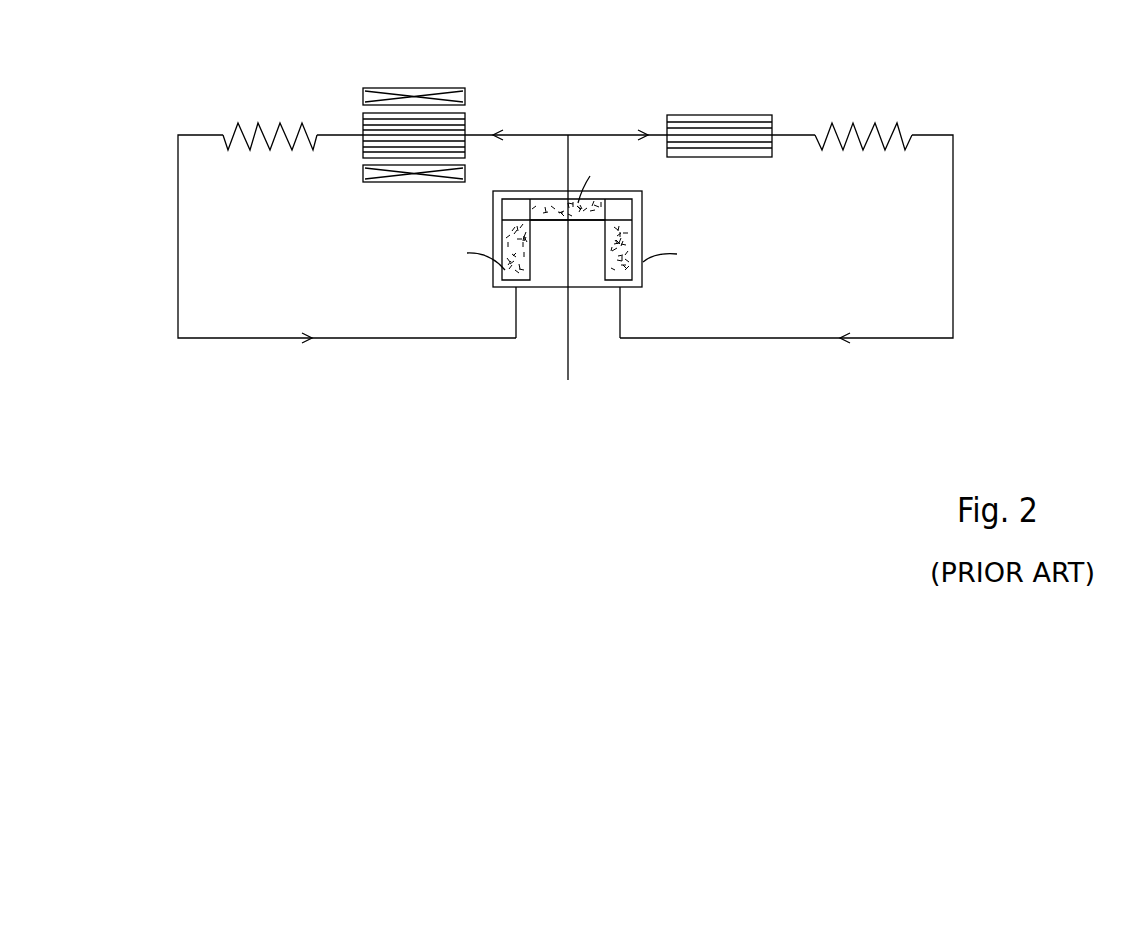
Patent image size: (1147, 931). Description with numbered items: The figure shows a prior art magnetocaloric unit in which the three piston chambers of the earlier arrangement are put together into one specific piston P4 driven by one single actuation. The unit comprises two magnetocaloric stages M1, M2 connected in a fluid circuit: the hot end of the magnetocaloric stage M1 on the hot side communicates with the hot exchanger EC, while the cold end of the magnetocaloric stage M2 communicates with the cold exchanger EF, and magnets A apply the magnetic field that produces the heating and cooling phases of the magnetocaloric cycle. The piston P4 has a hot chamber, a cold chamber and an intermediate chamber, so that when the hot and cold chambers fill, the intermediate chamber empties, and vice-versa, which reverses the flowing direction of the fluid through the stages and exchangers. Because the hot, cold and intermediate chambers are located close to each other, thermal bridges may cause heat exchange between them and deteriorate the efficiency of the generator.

The piston P4 is at (565, 197).
The magnetocaloric stage M1 is at (415, 125).
The magnetocaloric stage M2 is at (698, 120).
The magnets A is at (455, 162).
The hot exchanger EC is at (270, 118).
The cold exchanger EF is at (863, 119).